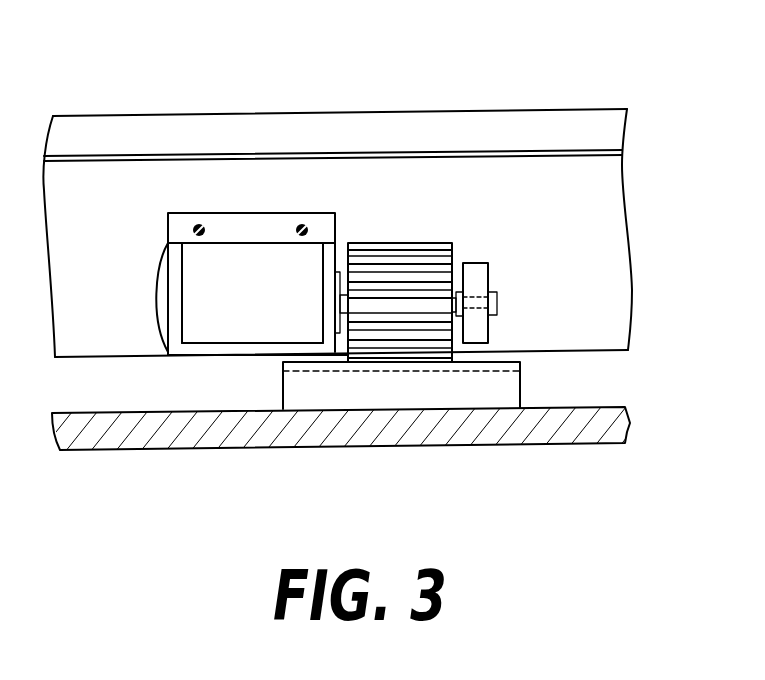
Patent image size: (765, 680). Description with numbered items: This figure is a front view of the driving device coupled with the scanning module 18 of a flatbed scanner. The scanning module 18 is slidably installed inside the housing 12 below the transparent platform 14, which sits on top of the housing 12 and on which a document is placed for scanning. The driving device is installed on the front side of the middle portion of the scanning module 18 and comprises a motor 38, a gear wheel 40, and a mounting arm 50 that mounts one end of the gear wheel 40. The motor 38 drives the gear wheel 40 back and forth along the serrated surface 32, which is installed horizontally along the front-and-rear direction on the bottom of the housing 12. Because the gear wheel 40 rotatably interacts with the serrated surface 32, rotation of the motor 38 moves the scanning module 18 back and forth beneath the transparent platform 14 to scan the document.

The housing 12 is at (445, 436).
The transparent platform 14 is at (373, 128).
The scanning module 18 is at (410, 211).
The serrated surface 32 is at (515, 387).
The motor 38 is at (255, 263).
The gear wheel 40 is at (440, 250).
The mounting arm 50 is at (485, 276).